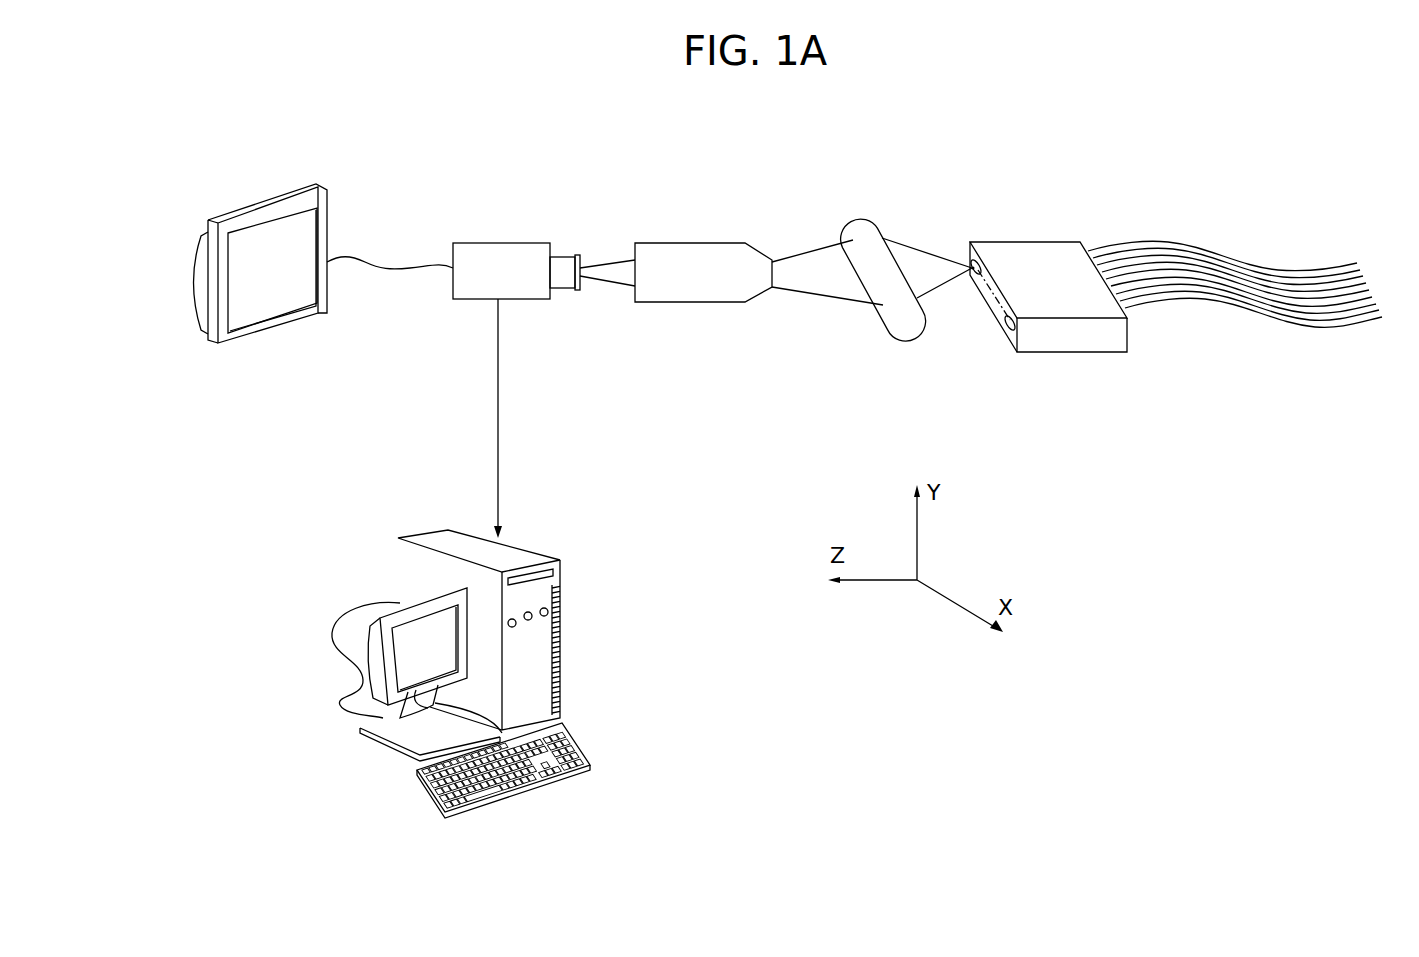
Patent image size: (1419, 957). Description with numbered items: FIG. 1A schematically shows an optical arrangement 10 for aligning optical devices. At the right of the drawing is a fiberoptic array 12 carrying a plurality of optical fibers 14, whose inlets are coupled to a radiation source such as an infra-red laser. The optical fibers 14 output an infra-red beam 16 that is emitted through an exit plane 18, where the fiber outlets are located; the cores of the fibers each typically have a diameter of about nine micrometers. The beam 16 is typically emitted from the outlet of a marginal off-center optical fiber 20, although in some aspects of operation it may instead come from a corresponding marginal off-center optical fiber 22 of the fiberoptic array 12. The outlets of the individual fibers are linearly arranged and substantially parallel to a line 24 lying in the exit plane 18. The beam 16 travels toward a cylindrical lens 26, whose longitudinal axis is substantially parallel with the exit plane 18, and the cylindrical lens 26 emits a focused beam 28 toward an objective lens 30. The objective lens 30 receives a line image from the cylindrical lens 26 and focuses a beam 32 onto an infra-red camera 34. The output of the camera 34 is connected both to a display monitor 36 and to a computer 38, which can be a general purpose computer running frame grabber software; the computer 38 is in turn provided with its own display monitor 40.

The optical arrangement 10 is at (1097, 93).
The fiberoptic array 12 is at (1080, 343).
The optical fibers 14 is at (1157, 248).
The infra-red beam 16 is at (942, 270).
The exit plane 18 is at (968, 265).
The marginal off-center optical fiber 20 is at (978, 263).
The corresponding marginal off-center optical fiber 22 is at (1008, 333).
The line 24 is at (990, 317).
The cylindrical lens 26 is at (855, 238).
The focused beam 28 is at (817, 272).
The objective lens 30 is at (677, 245).
The beam 32 is at (610, 262).
The infra-red camera 34 is at (495, 242).
The display monitor 36 is at (240, 213).
The computer 38 is at (563, 650).
The display monitor 40 is at (428, 627).